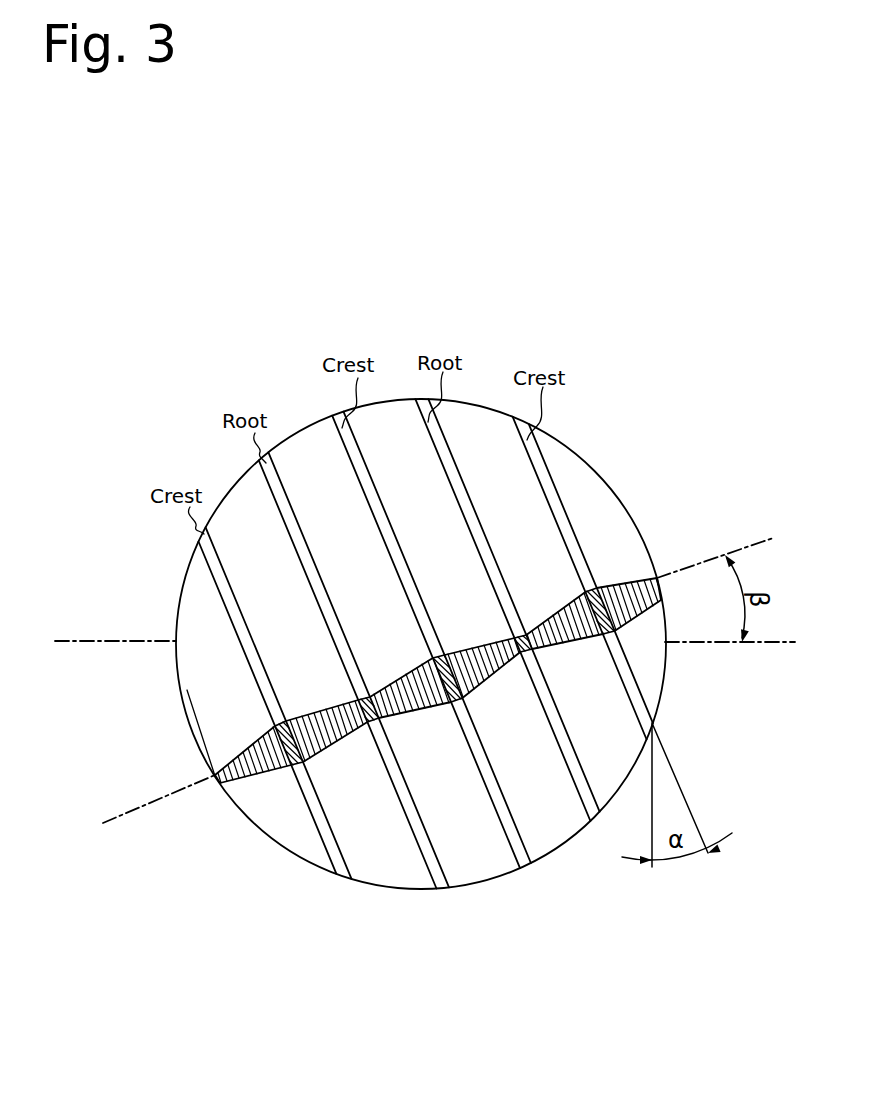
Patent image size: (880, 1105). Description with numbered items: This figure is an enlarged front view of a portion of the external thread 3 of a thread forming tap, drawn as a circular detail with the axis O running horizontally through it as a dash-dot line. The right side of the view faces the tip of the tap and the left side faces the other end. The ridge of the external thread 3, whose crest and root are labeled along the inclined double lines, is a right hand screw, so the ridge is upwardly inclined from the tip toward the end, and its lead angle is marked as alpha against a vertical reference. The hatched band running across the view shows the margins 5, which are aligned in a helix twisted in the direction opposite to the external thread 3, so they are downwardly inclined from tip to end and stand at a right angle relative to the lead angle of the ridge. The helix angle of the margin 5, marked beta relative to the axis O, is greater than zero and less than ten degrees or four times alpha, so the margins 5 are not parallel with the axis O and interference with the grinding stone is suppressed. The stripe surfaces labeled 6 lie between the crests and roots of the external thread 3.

The external thread 3 is at (207, 295).
The margin 5 is at (423, 717).
The thread flank surfaces 6 is at (352, 545).
The axis O is at (100, 641).